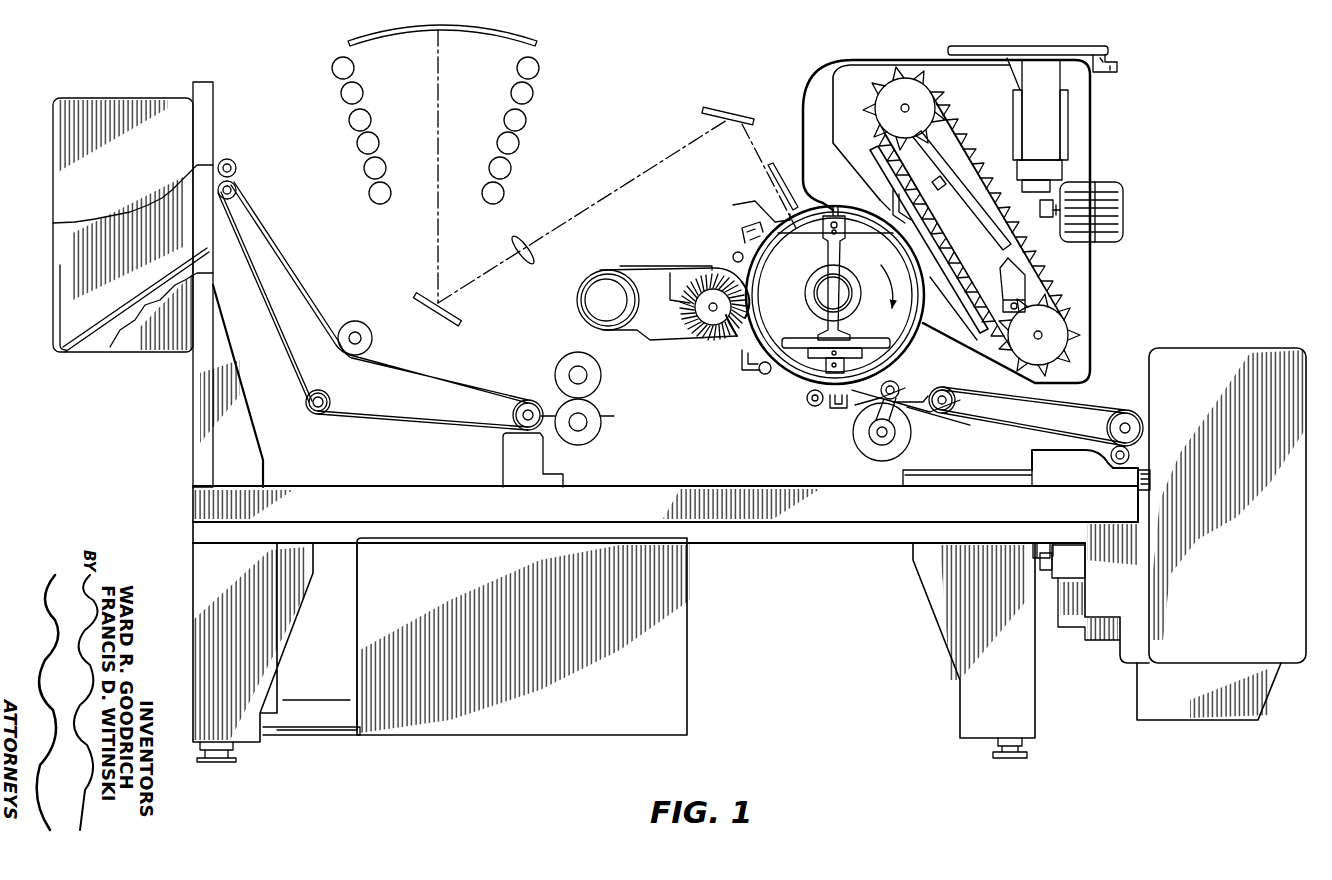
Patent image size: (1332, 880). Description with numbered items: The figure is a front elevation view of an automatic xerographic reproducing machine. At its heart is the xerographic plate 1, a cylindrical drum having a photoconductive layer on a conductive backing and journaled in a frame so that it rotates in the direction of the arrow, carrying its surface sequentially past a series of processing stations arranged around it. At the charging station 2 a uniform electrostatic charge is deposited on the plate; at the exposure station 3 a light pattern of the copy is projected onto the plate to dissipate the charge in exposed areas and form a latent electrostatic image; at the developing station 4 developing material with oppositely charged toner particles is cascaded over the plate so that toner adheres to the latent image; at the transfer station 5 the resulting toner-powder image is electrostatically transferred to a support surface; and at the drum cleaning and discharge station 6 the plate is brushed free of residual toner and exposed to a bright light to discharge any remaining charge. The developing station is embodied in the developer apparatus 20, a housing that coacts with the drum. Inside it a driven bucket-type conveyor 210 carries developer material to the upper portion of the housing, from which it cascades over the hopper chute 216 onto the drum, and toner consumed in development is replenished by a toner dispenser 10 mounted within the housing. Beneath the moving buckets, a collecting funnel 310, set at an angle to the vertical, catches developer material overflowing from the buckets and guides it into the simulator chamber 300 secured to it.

The xerographic plate 1 is at (920, 349).
The charging station 2 is at (738, 223).
The exposure station 3 is at (767, 196).
The developing station 4 is at (900, 226).
The transfer station 5 is at (820, 416).
The drum cleaning and discharge station 6 is at (720, 252).
The toner dispenser 10 is at (1078, 137).
The developer apparatus 20 is at (833, 62).
The hopper chute 216 is at (841, 102).
The bucket-type conveyor 210 is at (953, 102).
The collecting funnel 310 is at (958, 182).
The simulator chamber 300 is at (1032, 283).